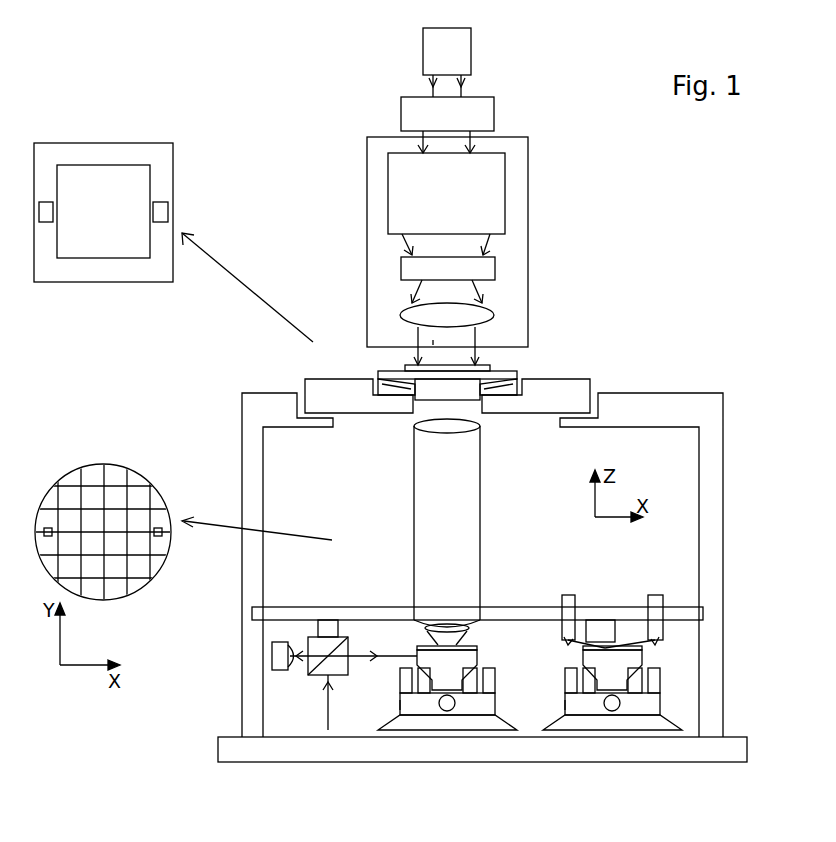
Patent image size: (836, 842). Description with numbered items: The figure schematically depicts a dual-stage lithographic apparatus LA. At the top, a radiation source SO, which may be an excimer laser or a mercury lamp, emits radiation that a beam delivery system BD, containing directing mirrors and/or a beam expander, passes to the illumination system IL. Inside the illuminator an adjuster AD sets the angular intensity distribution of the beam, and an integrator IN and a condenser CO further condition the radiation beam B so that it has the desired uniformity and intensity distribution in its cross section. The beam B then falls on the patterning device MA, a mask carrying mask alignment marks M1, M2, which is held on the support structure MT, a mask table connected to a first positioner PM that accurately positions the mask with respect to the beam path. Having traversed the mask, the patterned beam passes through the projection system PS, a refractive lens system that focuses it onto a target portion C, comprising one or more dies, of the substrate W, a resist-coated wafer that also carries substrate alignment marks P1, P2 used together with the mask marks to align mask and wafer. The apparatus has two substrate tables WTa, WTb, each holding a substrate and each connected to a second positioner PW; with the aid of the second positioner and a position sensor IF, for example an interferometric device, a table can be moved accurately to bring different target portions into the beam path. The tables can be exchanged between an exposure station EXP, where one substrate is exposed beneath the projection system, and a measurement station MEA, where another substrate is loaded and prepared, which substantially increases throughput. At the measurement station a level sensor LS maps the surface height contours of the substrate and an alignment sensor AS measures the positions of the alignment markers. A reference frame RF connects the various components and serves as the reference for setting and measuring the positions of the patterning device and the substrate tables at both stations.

The lithographic apparatus LA is at (632, 218).
The radiation source SO is at (471, 56).
The beam delivery system BD is at (494, 120).
The illumination system IL is at (528, 174).
The adjuster AD is at (505, 218).
The integrator IN is at (495, 266).
The condenser CO is at (494, 315).
The radiation beam B is at (447, 361).
The patterning device MA is at (397, 367).
The mask alignment mark M1 is at (160, 202).
The mask alignment mark M2 is at (44, 200).
The first positioner PM is at (293, 380).
The support structure MT is at (590, 380).
The projection system PS is at (480, 512).
The reference frame RF is at (532, 607).
The position sensor IF is at (304, 678).
The substrate W is at (420, 648).
The target portion C is at (104, 532).
The substrate alignment mark P1 is at (48, 528).
The substrate alignment mark P2 is at (157, 528).
The substrate table WTa is at (475, 653).
The substrate table WTb is at (642, 657).
The exposure station EXP is at (447, 728).
The measurement station MEA is at (612, 728).
The second positioner PW is at (400, 707).
The level sensor LS is at (662, 597).
The alignment sensor AS is at (597, 627).